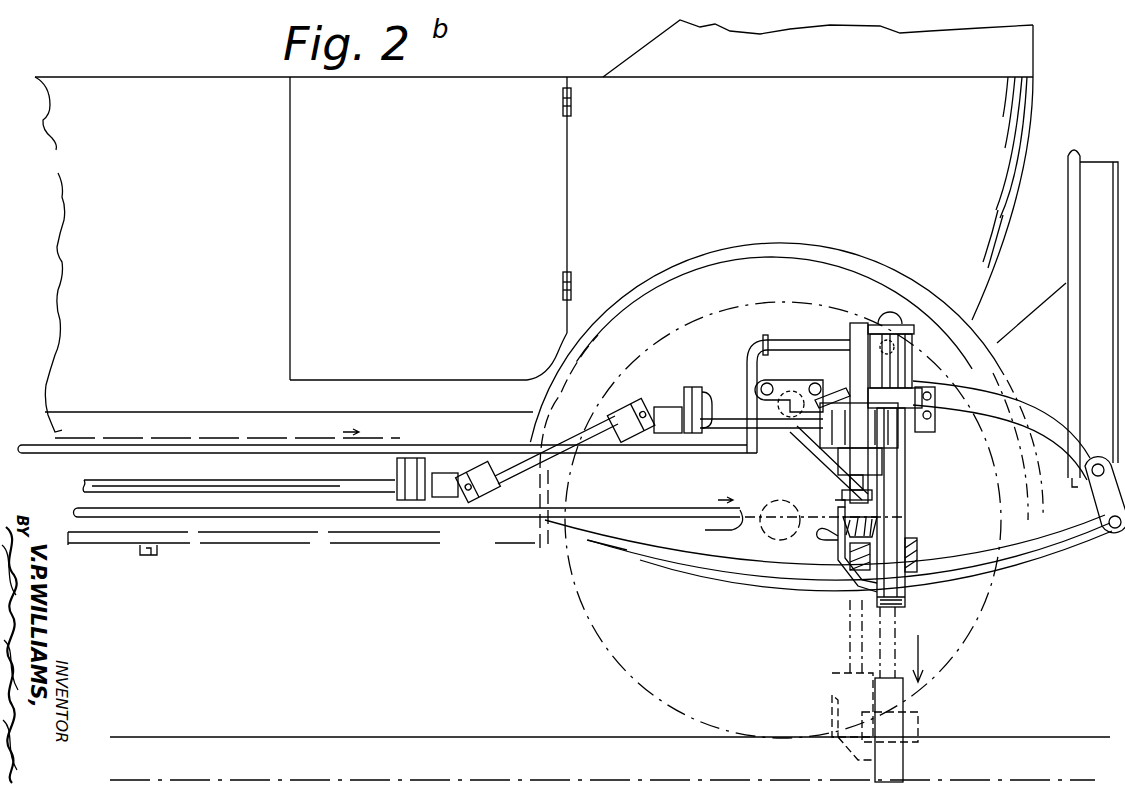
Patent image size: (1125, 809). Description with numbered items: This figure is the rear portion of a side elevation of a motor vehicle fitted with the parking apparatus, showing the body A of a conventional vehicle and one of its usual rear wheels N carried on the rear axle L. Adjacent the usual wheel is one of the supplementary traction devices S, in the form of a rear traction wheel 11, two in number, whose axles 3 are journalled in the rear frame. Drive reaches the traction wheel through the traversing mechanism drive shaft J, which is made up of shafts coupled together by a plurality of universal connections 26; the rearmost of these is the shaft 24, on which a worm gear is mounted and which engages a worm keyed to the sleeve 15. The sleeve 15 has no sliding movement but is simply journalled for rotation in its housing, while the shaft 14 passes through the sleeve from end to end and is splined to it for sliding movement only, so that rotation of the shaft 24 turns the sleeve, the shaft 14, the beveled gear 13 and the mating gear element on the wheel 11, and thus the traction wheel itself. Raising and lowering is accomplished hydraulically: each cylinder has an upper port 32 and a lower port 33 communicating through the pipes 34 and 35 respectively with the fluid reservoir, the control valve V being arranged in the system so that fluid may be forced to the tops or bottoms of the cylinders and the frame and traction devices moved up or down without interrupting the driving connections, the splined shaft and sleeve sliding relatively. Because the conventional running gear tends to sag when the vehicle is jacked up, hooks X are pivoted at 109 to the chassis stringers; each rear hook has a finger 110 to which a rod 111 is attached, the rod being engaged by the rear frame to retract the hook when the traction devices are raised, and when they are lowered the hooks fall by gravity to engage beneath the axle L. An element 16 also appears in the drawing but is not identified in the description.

The body A is at (305, 226).
The rear wheels N is at (590, 632).
The traversing mechanism drive shaft J is at (256, 502).
The universal connections 26 is at (648, 408).
The shaft 24 is at (737, 398).
The pipe 34 is at (794, 344).
The pipe 35 is at (408, 515).
The pivot 109 is at (797, 400).
The finger 110 is at (842, 392).
The rod 111 is at (910, 447).
The control valve V is at (921, 362).
The hooks X is at (822, 458).
The sleeve 15 is at (898, 479).
The shaft 14 is at (905, 494).
The lower port 33 is at (905, 516).
The rear traction wheels 11 is at (905, 527).
The beveled gear 13 is at (840, 522).
The axles 3 is at (853, 562).
The clip 16 is at (868, 566).
The rear axle L is at (767, 540).
The supplementary traction devices S is at (906, 597).
The upper port 32 is at (968, 322).